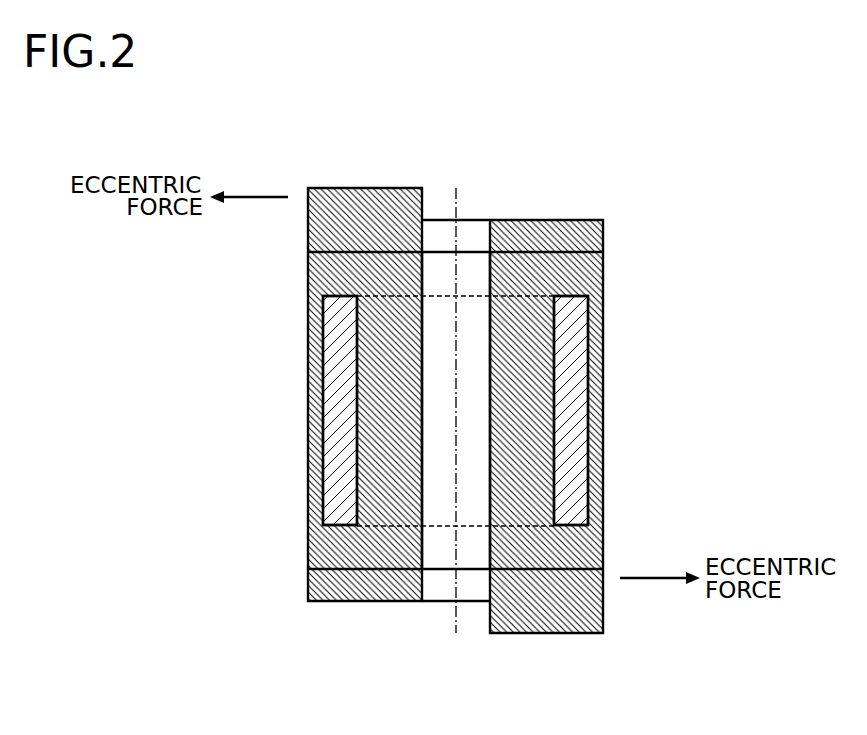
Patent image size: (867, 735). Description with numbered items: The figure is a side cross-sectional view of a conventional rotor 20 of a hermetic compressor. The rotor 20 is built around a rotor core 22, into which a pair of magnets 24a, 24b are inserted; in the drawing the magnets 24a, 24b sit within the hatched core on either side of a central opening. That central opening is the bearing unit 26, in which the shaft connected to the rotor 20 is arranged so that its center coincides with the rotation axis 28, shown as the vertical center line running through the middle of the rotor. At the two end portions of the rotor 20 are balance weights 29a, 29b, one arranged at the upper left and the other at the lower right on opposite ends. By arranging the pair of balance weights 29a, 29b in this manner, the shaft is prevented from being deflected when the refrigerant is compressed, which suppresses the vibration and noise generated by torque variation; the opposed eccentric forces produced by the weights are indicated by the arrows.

The rotor 20 is at (456, 388).
The rotor core 22 is at (333, 560).
The magnet 24a is at (332, 373).
The magnet 24b is at (578, 370).
The bearing unit 26 is at (434, 263).
The rotation axis 28 is at (456, 198).
The balance weight 29a is at (357, 199).
The balance weight 29b is at (540, 623).